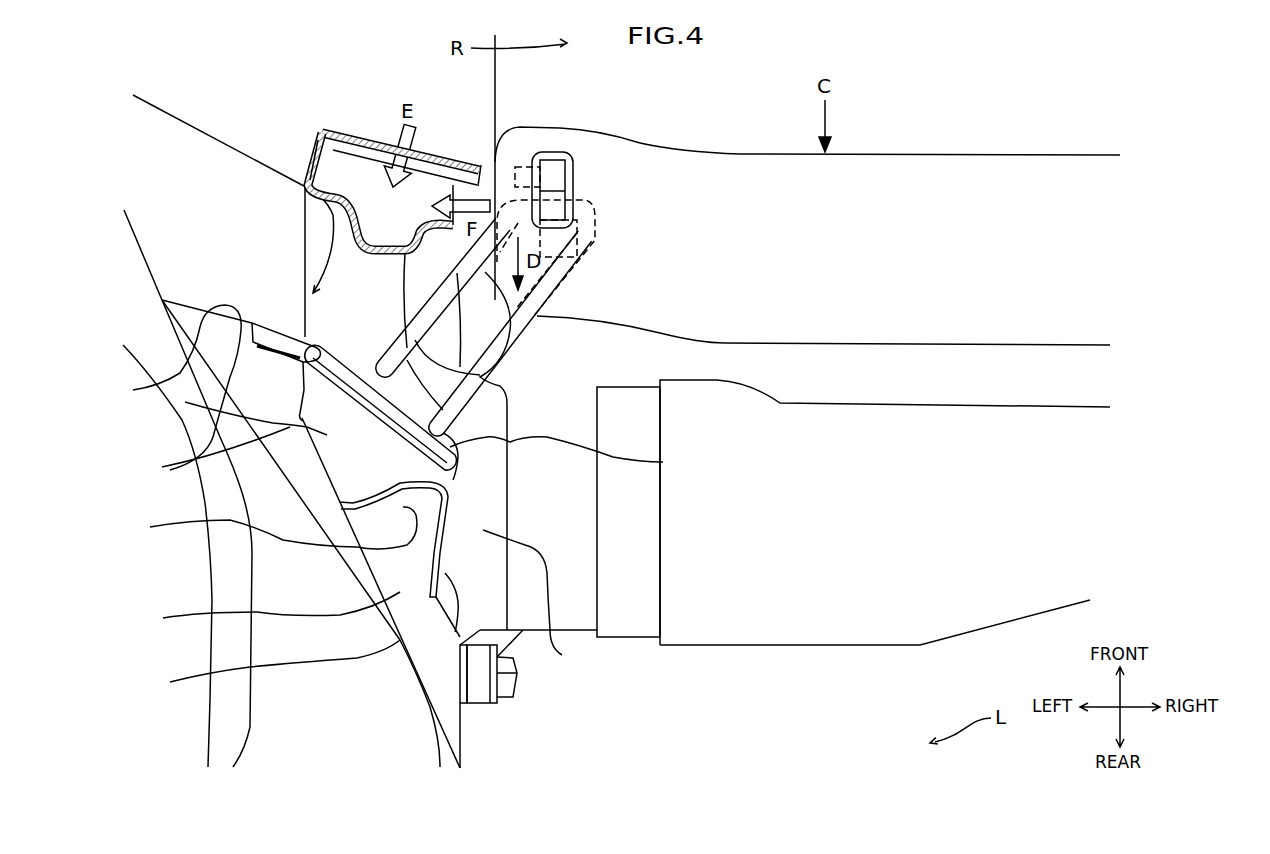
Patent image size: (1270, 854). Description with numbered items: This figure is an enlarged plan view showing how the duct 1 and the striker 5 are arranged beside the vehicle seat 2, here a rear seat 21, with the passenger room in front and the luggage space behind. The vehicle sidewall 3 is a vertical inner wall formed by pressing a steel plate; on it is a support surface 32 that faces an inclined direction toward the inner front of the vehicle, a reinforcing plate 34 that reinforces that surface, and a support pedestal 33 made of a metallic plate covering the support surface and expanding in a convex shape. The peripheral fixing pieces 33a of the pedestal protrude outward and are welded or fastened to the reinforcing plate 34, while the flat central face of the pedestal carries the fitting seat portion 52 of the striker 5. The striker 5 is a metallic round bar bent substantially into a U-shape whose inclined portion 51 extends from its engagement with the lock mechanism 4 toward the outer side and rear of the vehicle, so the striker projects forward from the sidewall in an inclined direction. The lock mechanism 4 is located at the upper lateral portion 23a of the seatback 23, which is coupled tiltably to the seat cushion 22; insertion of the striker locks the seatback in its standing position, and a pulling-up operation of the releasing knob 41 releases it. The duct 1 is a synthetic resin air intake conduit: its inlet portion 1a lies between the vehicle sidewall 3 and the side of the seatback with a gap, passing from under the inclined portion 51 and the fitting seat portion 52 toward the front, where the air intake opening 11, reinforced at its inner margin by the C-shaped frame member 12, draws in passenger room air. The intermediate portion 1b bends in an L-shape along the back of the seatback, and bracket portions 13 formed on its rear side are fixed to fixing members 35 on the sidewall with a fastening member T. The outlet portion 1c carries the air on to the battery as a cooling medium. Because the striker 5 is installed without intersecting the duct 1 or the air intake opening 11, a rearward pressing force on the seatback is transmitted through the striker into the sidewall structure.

The duct 1 is at (690, 400).
The inlet portion 1a is at (311, 162).
The intermediate portion 1b is at (521, 599).
The outlet portion 1c is at (962, 573).
The vehicle seat 2 is at (782, 214).
The vehicle sidewall 3 is at (199, 298).
The lock mechanism 4 is at (591, 167).
The striker 5 is at (595, 228).
The air intake opening 11 is at (365, 170).
The frame member 12 is at (460, 158).
The bracket portion 13 is at (495, 697).
The rear seat 21 is at (890, 346).
The seat cushion 22 is at (538, 89).
The seatback 23 is at (1040, 155).
The upper lateral portion 23a is at (523, 137).
The support surface 32 is at (134, 390).
The support pedestal 33 is at (443, 477).
The fixing piece 33a is at (291, 534).
The reinforcing plate 34 is at (266, 612).
The fixing member 35 is at (470, 687).
The releasing knob 41 is at (553, 160).
The inclined portion 51 is at (493, 358).
The fitting seat portion 52 is at (568, 512).
The fastening member T is at (517, 674).